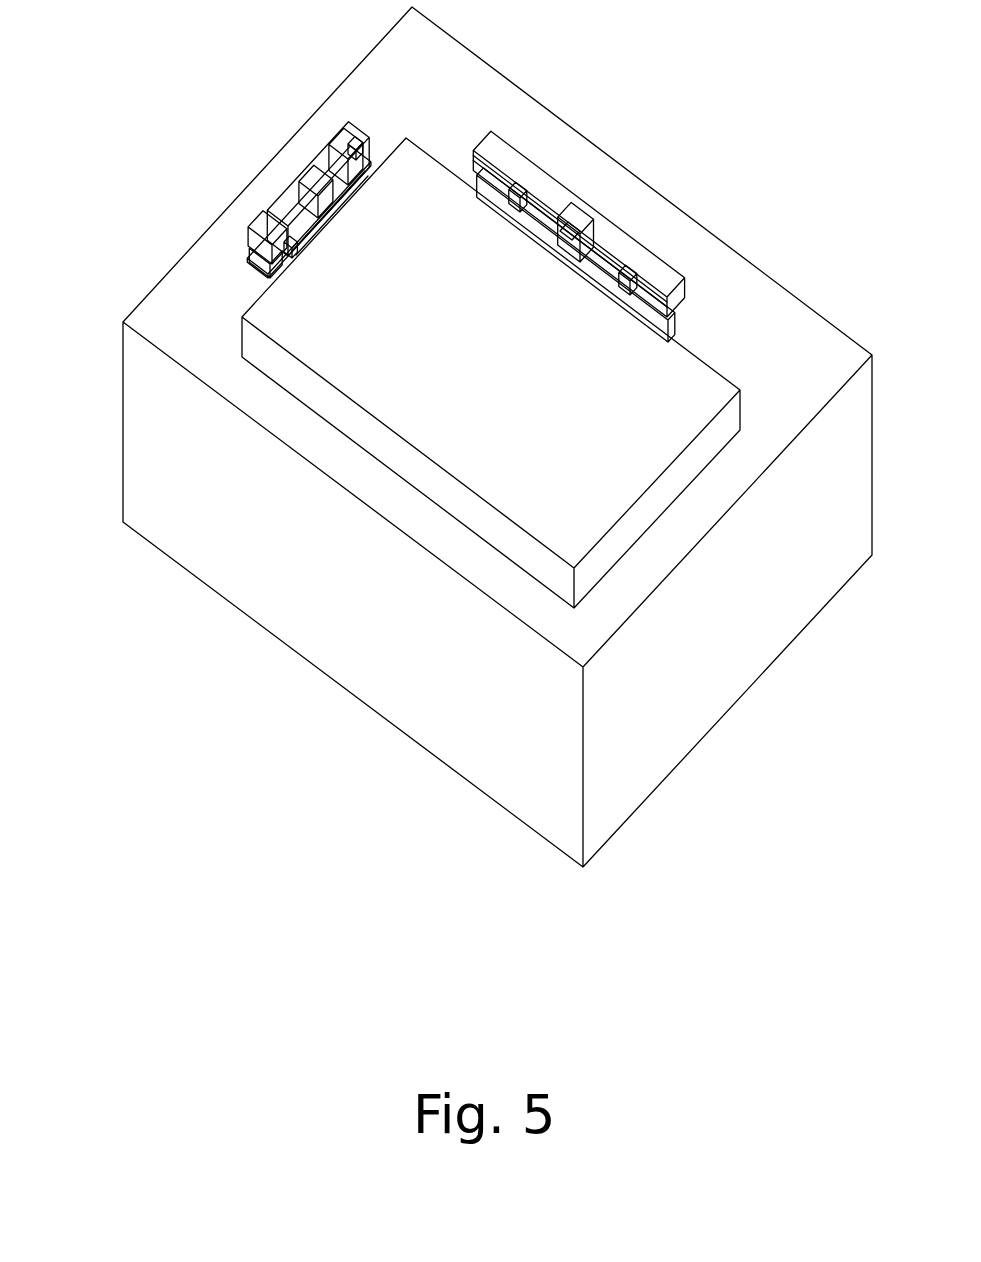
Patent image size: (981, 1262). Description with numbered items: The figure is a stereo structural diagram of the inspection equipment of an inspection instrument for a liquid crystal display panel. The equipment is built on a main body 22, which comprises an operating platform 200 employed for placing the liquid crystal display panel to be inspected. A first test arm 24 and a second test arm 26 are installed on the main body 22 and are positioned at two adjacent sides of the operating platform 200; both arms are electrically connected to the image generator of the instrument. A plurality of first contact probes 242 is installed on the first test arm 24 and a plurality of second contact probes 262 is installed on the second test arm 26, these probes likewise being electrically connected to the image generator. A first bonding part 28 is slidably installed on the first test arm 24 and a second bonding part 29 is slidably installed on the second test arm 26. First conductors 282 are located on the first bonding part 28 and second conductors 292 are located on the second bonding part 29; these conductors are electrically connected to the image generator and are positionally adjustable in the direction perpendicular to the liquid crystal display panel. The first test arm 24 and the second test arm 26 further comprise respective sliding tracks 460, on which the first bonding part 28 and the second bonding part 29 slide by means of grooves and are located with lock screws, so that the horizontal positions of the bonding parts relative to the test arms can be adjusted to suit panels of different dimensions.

The main body 22 is at (798, 343).
The operating platform 200 is at (513, 447).
The first test arm 24 is at (219, 156).
The first contact probes 242 is at (287, 253).
The first bonding part 28 is at (353, 153).
The first conductors 282 is at (355, 145).
The sliding tracks 460 is at (268, 230).
The second test arm 26 is at (622, 210).
The second contact probes 262 is at (615, 295).
The second bonding part 29 is at (575, 220).
The second conductors 292 is at (562, 243).